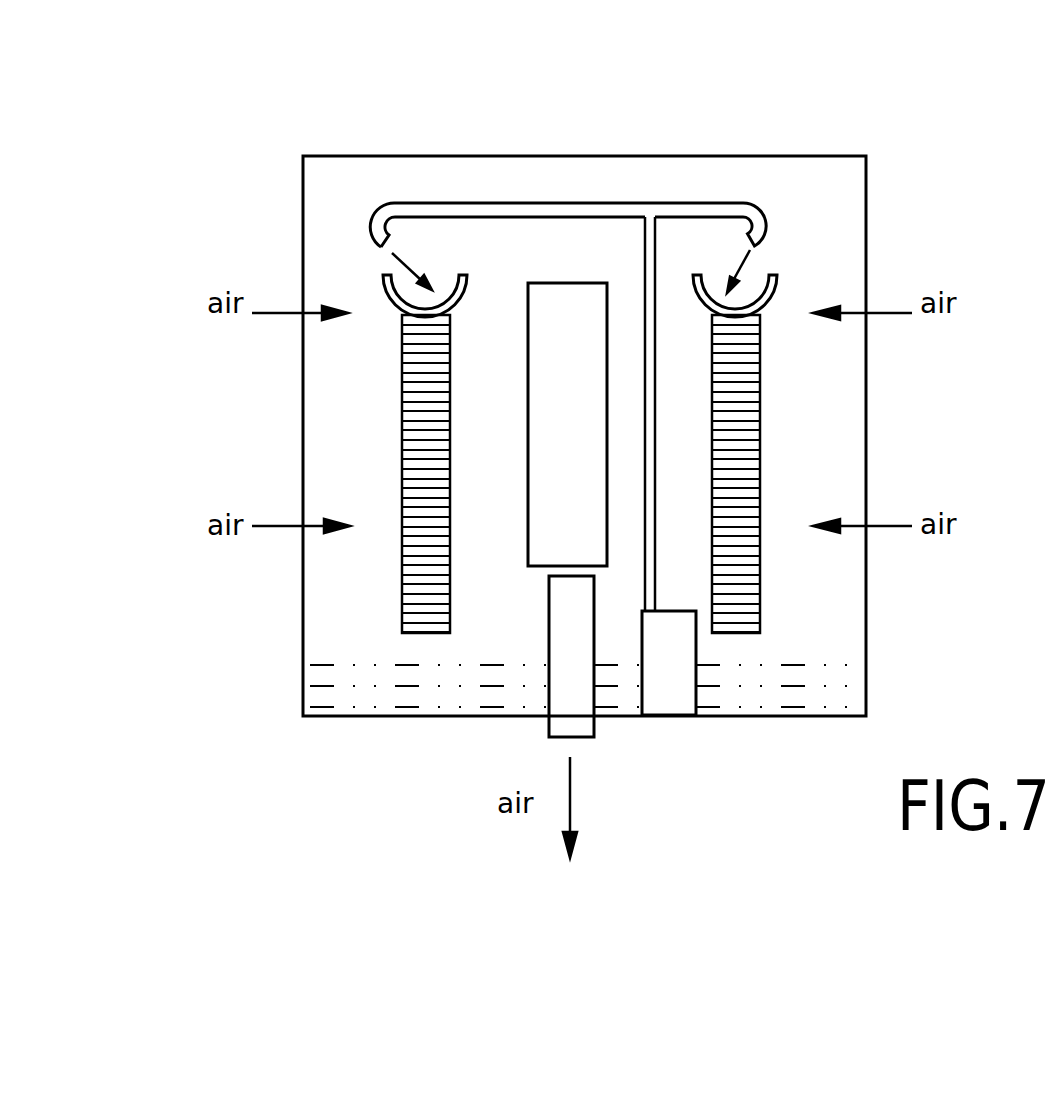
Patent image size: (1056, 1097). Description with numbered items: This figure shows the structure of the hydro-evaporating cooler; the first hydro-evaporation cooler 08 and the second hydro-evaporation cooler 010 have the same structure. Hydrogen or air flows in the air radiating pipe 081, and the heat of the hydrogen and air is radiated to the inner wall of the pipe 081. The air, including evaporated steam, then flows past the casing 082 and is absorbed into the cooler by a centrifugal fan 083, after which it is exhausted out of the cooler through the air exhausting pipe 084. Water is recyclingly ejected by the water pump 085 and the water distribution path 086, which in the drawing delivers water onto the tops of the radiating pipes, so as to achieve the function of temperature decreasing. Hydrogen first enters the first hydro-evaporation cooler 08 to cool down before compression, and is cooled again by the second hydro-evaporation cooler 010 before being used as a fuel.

The casing 082 is at (302, 210).
The centrifugal fan 083 is at (565, 303).
The air exhausting pipe 084 is at (593, 733).
The water pump 085 is at (668, 693).
The water distribution path 086 is at (688, 203).
The first hydro-evaporation cooler 08 is at (327, 539).
The air radiating pipe 081 is at (427, 617).
The second hydro-evaporation cooler 010 is at (767, 370).